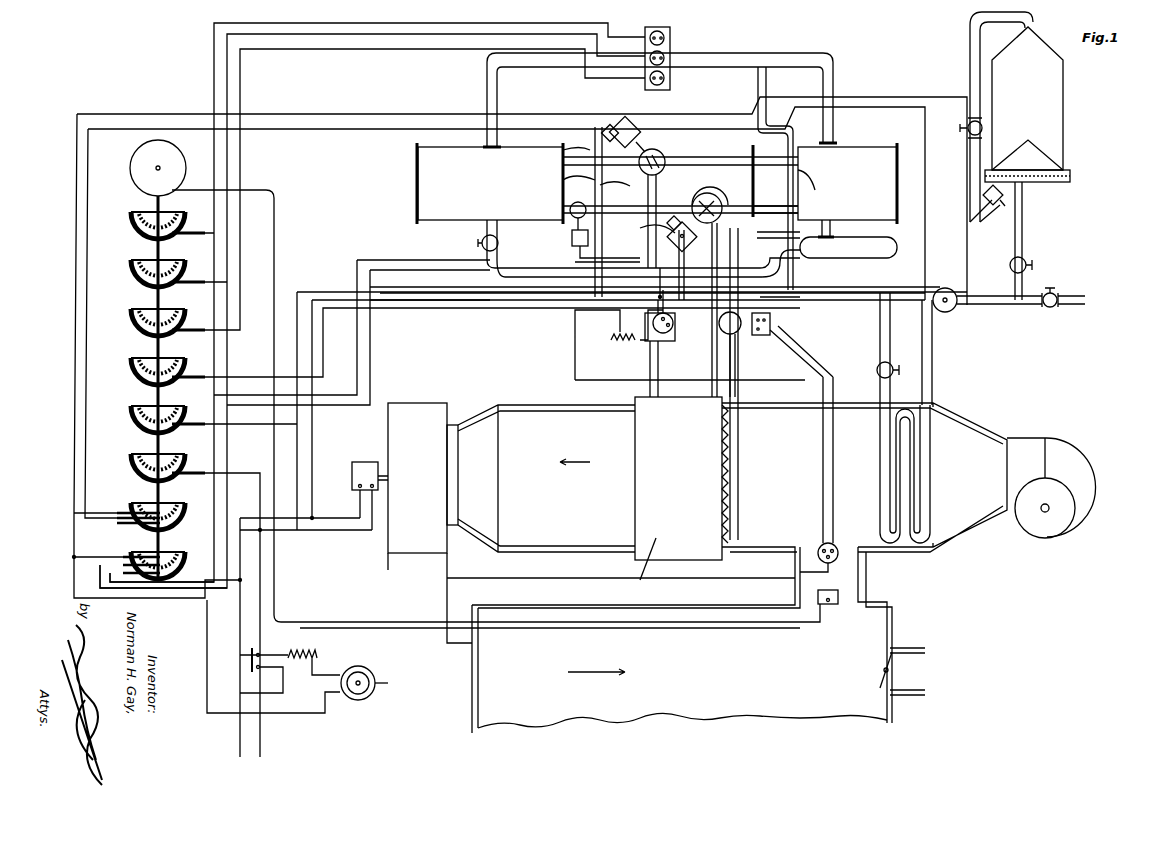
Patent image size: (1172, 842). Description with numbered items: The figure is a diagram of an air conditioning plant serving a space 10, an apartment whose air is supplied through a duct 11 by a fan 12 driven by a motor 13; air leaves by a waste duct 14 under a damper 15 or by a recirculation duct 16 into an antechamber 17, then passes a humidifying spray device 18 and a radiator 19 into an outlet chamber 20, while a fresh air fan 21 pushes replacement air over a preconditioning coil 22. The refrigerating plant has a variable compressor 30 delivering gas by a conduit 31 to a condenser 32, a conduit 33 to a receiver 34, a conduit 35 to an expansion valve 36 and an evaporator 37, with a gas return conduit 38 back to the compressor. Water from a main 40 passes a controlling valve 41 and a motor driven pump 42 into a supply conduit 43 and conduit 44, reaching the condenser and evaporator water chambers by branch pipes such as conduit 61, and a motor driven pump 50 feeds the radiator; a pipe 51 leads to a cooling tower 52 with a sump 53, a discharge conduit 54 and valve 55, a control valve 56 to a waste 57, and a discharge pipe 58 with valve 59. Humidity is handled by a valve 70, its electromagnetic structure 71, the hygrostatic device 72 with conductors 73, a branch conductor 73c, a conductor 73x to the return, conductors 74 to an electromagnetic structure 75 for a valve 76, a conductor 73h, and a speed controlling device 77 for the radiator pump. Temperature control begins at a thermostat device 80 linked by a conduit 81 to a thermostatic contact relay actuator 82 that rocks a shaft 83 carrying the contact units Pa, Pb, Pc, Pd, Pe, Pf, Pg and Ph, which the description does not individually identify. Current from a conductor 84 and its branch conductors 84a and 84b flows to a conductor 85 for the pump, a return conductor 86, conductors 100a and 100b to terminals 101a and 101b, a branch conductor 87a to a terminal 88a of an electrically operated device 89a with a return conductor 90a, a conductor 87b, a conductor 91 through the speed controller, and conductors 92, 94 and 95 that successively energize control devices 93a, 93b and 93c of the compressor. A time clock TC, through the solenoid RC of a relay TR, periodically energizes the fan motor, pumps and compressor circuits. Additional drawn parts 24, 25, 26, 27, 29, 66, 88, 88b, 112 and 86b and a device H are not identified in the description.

The space 10 is at (679, 669).
The duct 11 is at (440, 603).
The fan 12 is at (430, 523).
The motor 13 is at (362, 462).
The waste duct 14 is at (915, 668).
The damper 15 is at (880, 680).
The recirculation duct 16 is at (862, 586).
The antechamber 17 is at (785, 518).
The humidifying spray device 18 is at (740, 430).
The radiator 19 is at (678, 478).
The outlet chamber 20 is at (596, 518).
The fresh air fan 21 is at (1066, 452).
The preconditioning coil 22 is at (900, 474).
The valve 24 is at (700, 196).
The valve 25 is at (722, 196).
The pipe 26 is at (736, 155).
The pipe 27 is at (592, 160).
The pipe 29 is at (665, 236).
The variable compressor 30 is at (670, 30).
The conduit 31 is at (777, 58).
The condenser 32 is at (847, 183).
The conduit 33 is at (835, 232).
The receiver 34 is at (848, 247).
The conduit 35 is at (490, 276).
The expansion valve 36 is at (497, 240).
The evaporator 37 is at (490, 183).
The gas return conduit 38 is at (487, 89).
The main 40 is at (1060, 300).
The controlling valve 41 is at (1050, 307).
The motor driven pump 42 is at (955, 292).
The supply conduit 43 is at (915, 310).
The motor driven pump 50 is at (668, 322).
The pipe 51 is at (775, 100).
The cooling tower 52 is at (1063, 80).
The sump 53 is at (1070, 182).
The discharge conduit 54 is at (1022, 228).
The valve 55 is at (1033, 260).
The control valve 56 is at (968, 133).
The waste 57 is at (970, 208).
The discharge pipe 58 is at (982, 188).
The valve 59 is at (1006, 202).
The conduit 61 is at (680, 228).
The pipe 66 is at (770, 276).
The valve 70 is at (737, 345).
The electromagnetic structure 71 is at (770, 335).
The hygrostatic device 72 is at (848, 535).
The conductors 73 is at (823, 458).
The conductor 73h is at (560, 140).
The branch conductor 73c is at (824, 185).
The conductor 73x is at (660, 556).
The conductors 74 is at (678, 382).
The electromagnetic structure 75 is at (572, 237).
The valve 76 is at (680, 209).
The speed controlling device 77 is at (618, 344).
The thermostat device 80 is at (838, 604).
The conduit 81 is at (280, 208).
The thermostatic contact relay actuator 82 is at (131, 158).
The shaft 83 is at (150, 346).
The conductor 84 is at (260, 478).
The branch conductor 84a is at (196, 604).
The branch conductor 84b is at (312, 720).
The conductor 85 is at (319, 292).
The conductor 86 is at (312, 446).
The wire 86b is at (276, 681).
The branch conductor 87a is at (87, 455).
The conductor 87b is at (415, 272).
The valve 88 is at (775, 207).
The terminal 88a is at (615, 178).
The lead 88b is at (640, 225).
The electrically operated device 89a is at (664, 156).
The conductor 90a is at (562, 170).
The conductor 91 is at (345, 308).
The conductor 92 is at (240, 167).
The control device 93a is at (664, 78).
The control device 93b is at (664, 58).
The control device 93c is at (664, 38).
The conductor 94 is at (227, 98).
The conductor 95 is at (214, 93).
The conductor 100a is at (405, 114).
The conductor 100b is at (400, 260).
The terminal 101a is at (620, 118).
The terminal 101b is at (670, 248).
The valve 112 is at (880, 352).
The conduit 44 is at (769, 229).
The mercury switch pan Pa is at (156, 220).
The mercury switch pan Pb is at (156, 268).
The mercury switch pan Pc is at (156, 315).
The mercury switch pan Pd is at (154, 367).
The mercury switch pan Pe is at (156, 410).
The mercury switch pan Pf is at (156, 458).
The mercury switch pan Pg is at (146, 507).
The mercury switch pan Ph is at (146, 557).
The relay TR is at (270, 650).
The solenoid RC is at (310, 650).
The time clock TC is at (370, 695).
The humidostat H is at (820, 546).